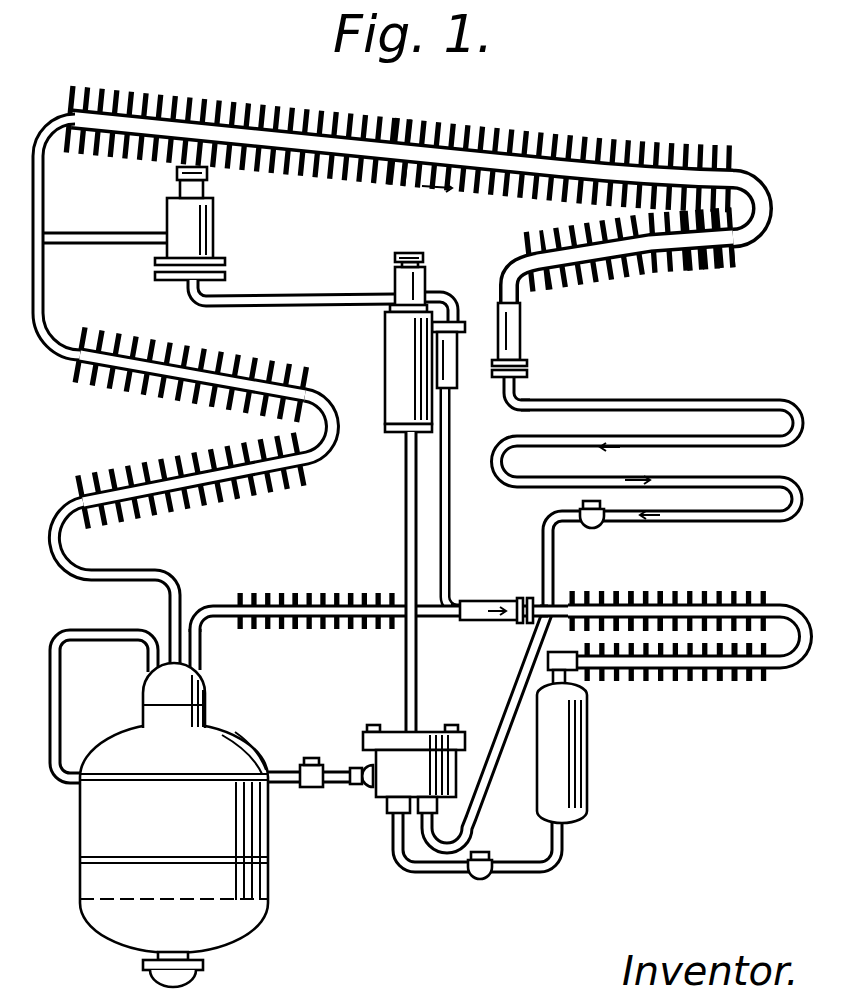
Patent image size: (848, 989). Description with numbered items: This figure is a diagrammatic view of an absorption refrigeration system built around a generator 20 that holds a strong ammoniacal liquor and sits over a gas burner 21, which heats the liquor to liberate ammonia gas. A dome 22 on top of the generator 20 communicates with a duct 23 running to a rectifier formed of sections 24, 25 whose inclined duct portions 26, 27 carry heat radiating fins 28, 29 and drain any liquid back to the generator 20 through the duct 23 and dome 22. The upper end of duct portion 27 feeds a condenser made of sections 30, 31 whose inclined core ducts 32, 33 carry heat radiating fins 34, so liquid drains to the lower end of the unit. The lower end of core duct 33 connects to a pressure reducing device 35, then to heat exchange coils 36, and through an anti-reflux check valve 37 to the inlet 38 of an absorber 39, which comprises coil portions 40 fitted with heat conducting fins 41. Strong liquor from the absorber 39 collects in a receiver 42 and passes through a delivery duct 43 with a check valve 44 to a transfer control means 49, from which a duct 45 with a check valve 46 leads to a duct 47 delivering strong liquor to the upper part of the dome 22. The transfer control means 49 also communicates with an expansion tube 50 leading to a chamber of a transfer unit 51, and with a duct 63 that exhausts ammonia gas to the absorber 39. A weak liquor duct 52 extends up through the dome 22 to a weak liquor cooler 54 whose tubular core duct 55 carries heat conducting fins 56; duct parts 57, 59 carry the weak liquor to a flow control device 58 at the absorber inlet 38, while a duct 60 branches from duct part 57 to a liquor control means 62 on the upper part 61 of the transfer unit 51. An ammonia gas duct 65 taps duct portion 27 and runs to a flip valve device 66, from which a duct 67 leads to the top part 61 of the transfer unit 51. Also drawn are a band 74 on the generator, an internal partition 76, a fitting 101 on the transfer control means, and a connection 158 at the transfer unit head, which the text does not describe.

The generator 20 is at (272, 820).
The gas burner 21 is at (205, 968).
The dome 22 is at (207, 691).
The duct 23 is at (159, 569).
The rectifier section 24 is at (158, 463).
The rectifier section 25 is at (165, 396).
The duct portion 26 is at (77, 504).
The duct portion 27 is at (46, 295).
The heat radiating fins 28 is at (270, 480).
The heat radiating fins 29 is at (265, 360).
The condenser section 30 is at (315, 126).
The condenser section 31 is at (565, 243).
The core duct 32 is at (222, 138).
The core duct 33 is at (630, 276).
The heat radiating fins 34 is at (398, 128).
The pressure reducing device 35 is at (519, 325).
The heat exchange coils 36 is at (728, 403).
The check valve 37 is at (601, 526).
The absorber inlet 38 is at (558, 604).
The absorber 39 is at (773, 600).
The coil portions 40 is at (686, 600).
The heat conducting fins 41 is at (655, 600).
The receiver 42 is at (590, 754).
The delivery duct 43 is at (405, 878).
The check valve 44 is at (472, 883).
The duct 45 is at (358, 792).
The check valve 46 is at (312, 790).
The duct 47 is at (102, 633).
The transfer control means 49 is at (368, 771).
The expansion tube 50 is at (418, 677).
The transfer unit 51 is at (385, 349).
The weak liquor duct 52 is at (208, 630).
The weak liquor cooler 54 is at (352, 600).
The core duct 55 is at (298, 600).
The heat conducting fins 56 is at (335, 632).
The duct part 57 is at (433, 621).
The weak liquor control means 58 is at (488, 599).
The duct part 59 is at (455, 600).
The duct 60 is at (451, 539).
The upper part of transfer unit 61 is at (426, 272).
The liquor control means 62 is at (449, 363).
The duct 63 is at (485, 815).
The ammonia gas duct 65 is at (93, 243).
The flip valve device 66 is at (167, 222).
The duct 67 is at (287, 297).
The band 74 is at (148, 846).
The partition 76 is at (143, 706).
The fitting 101 is at (436, 806).
The connection 158 is at (448, 301).